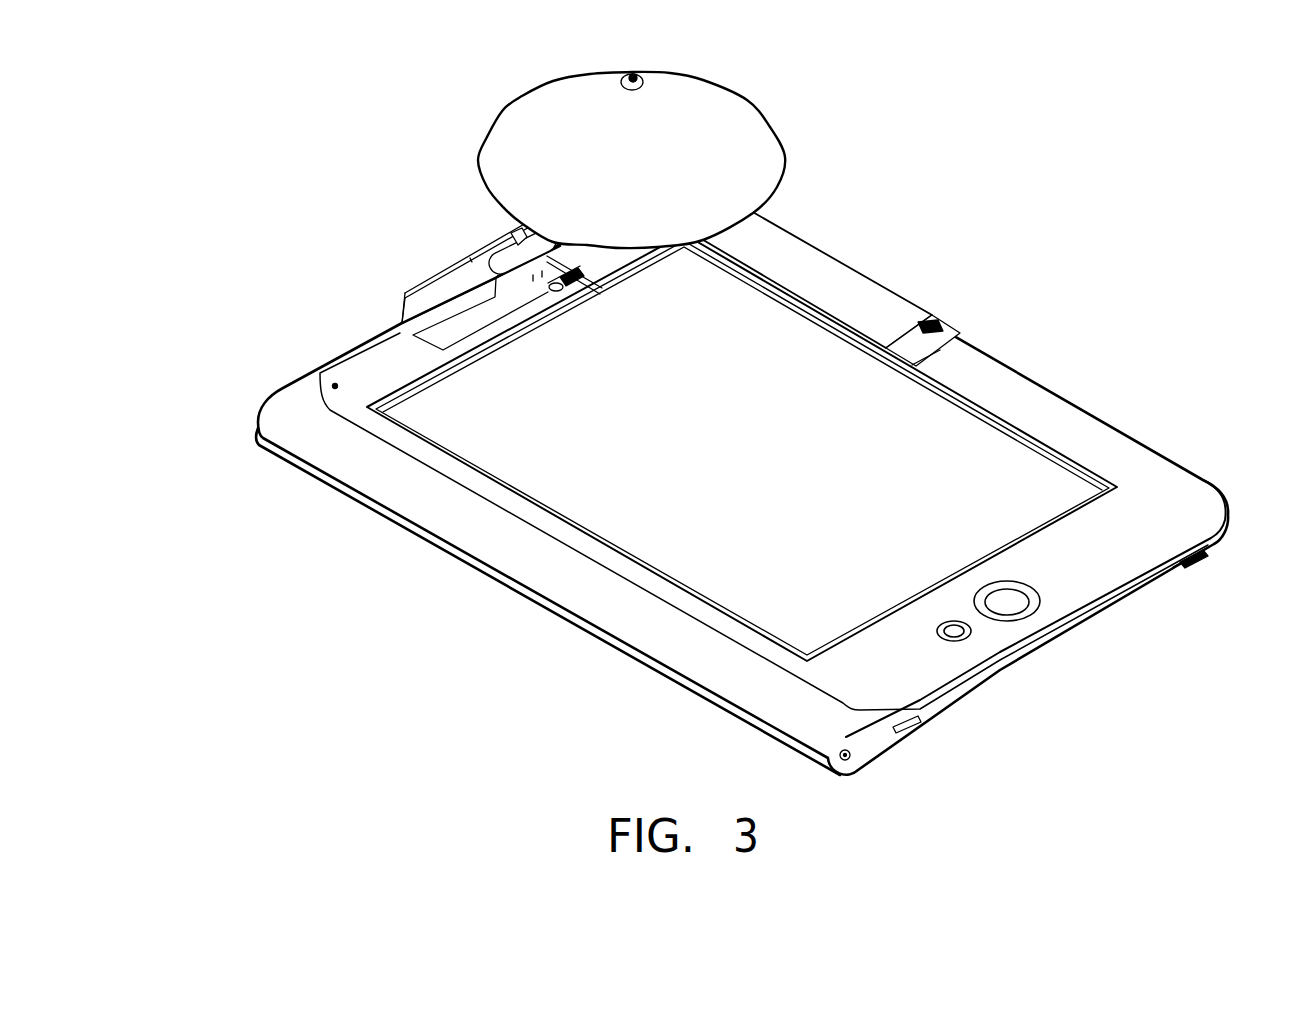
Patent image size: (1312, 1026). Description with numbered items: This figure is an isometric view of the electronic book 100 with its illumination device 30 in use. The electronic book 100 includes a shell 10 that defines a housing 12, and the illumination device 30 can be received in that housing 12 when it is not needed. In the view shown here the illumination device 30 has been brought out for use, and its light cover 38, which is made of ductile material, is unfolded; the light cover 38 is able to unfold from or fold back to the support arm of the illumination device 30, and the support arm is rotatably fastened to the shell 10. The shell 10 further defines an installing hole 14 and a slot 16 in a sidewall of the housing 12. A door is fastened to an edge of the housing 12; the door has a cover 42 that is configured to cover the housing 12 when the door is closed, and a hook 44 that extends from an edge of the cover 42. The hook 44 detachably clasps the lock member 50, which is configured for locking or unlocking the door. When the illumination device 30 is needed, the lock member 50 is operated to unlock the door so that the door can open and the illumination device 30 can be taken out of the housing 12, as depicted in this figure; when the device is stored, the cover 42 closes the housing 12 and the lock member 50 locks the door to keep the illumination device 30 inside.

The electronic book 100 is at (722, 412).
The shell 10 is at (1053, 388).
The housing 12 is at (448, 340).
The installing hole 14 is at (557, 266).
The slot 16 is at (457, 270).
The illumination device 30 is at (631, 160).
The light cover 38 is at (757, 142).
The cover 42 is at (405, 294).
The hook 44 is at (487, 252).
The lock member 50 is at (572, 280).